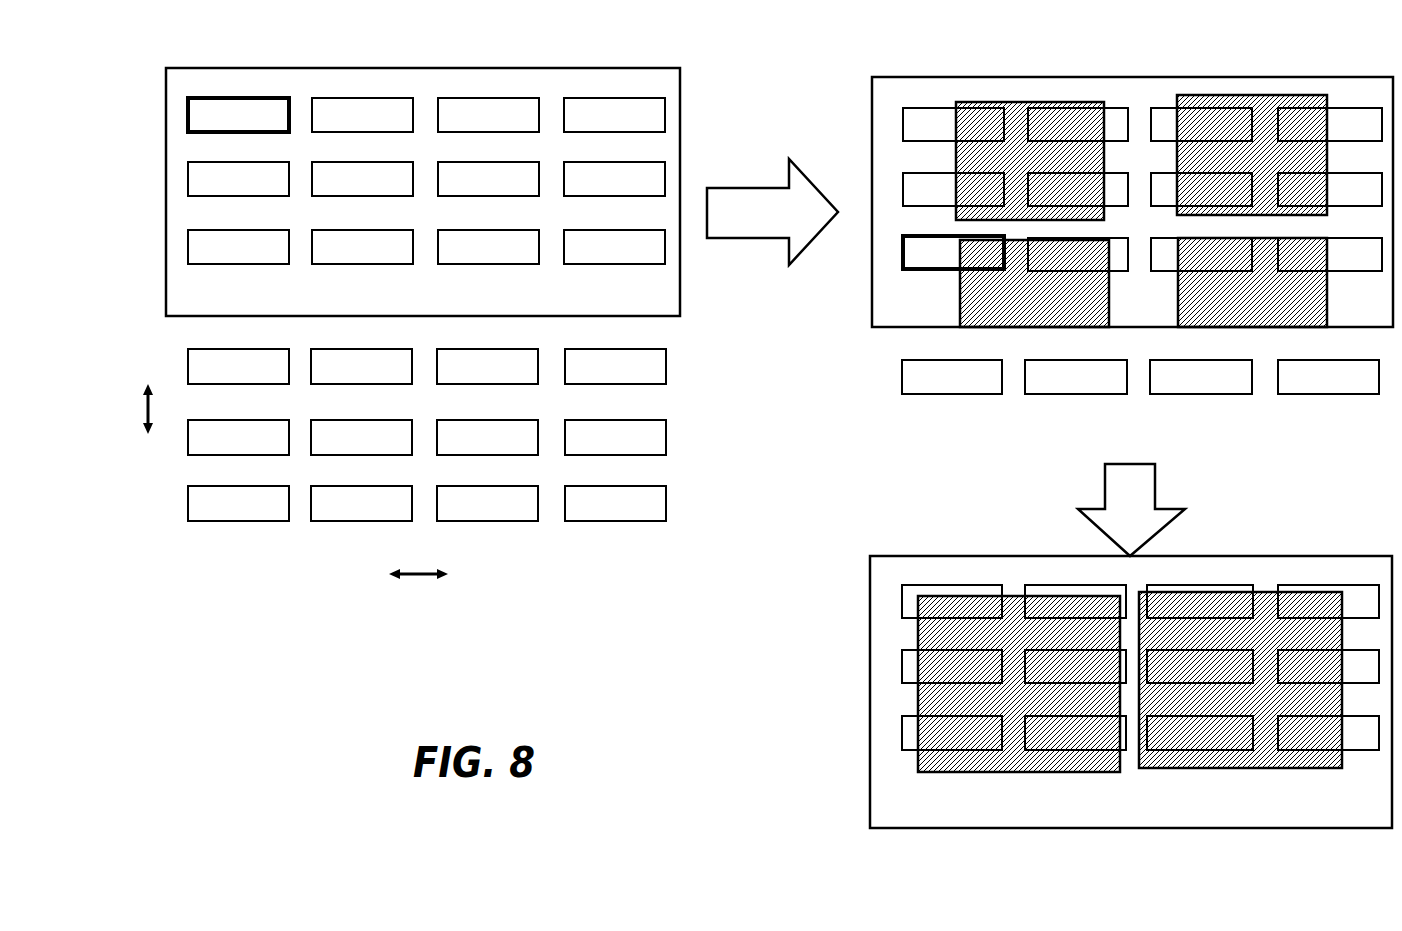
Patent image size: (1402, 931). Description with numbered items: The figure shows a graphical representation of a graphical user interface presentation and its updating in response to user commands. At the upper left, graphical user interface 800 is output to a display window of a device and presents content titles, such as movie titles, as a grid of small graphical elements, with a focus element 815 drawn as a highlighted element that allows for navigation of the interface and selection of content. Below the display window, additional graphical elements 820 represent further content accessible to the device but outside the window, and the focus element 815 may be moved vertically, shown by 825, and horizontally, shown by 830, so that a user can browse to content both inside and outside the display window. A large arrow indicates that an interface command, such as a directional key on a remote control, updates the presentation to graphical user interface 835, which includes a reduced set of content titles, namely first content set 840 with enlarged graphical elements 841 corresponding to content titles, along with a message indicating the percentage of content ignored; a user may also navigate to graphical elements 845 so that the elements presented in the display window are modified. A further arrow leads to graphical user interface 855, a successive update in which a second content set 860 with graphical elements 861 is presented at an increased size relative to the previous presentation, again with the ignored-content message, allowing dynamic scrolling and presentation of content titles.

The graphical user interface 800 is at (220, 53).
The focus element 815 is at (278, 97).
The additional graphical elements 820 is at (683, 397).
The vertical direction 825 is at (168, 409).
The horizontal direction 830 is at (418, 562).
The graphical user interface 835 is at (861, 56).
The first content set 840 is at (985, 93).
The graphical elements 841 is at (1343, 303).
The graphical elements 845 is at (892, 380).
The graphical user interface 855 is at (855, 540).
The second content set 860 is at (957, 571).
The graphical elements 861 is at (1315, 522).